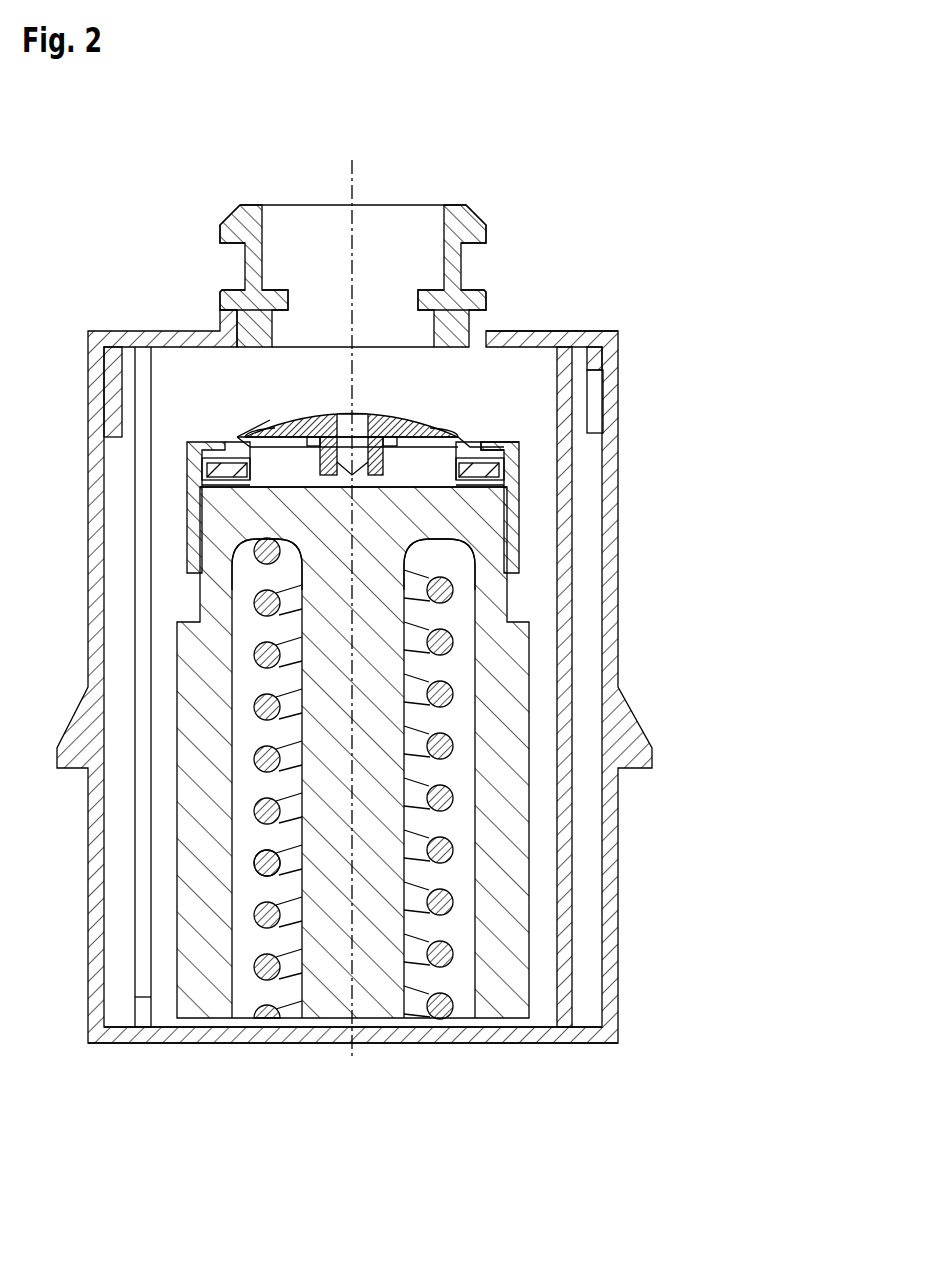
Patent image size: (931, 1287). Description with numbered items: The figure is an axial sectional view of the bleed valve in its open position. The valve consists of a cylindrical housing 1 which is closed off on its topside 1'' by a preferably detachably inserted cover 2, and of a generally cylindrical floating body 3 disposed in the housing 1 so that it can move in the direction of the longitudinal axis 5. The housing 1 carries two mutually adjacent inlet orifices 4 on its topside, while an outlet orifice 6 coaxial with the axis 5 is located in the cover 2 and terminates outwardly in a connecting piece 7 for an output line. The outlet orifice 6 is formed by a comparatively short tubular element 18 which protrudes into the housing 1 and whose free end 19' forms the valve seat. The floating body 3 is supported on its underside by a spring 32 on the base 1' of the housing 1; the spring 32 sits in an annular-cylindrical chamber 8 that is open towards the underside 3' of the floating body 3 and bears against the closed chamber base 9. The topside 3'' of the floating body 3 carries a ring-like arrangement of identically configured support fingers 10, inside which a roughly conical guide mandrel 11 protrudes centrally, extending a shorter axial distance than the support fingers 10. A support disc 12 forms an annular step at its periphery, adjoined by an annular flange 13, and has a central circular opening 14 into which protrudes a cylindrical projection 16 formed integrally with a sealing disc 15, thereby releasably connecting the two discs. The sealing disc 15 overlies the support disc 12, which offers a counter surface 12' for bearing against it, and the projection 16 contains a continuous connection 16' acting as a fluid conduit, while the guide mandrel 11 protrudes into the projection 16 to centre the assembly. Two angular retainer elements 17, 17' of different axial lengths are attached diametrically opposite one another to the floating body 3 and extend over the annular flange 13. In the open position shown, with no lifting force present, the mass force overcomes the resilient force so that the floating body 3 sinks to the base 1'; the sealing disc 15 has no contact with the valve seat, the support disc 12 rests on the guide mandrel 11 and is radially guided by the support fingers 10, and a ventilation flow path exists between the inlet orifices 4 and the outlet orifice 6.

The housing 1 is at (343, 676).
The base 1' is at (353, 1068).
The topside 1'' is at (364, 172).
The cover 2 is at (512, 328).
The floating body 3 is at (302, 687).
The underside 3' is at (176, 1053).
The topside 3'' is at (581, 469).
The inlet orifices 4 is at (92, 542).
The longitudinal axis 5 is at (354, 158).
The outlet orifice 6 is at (290, 268).
The connecting piece 7 is at (235, 213).
The annular-cylindrical chamber 8 is at (250, 793).
The chamber base 9 is at (236, 583).
The support fingers 10 is at (220, 483).
The guide mandrel 11 is at (258, 457).
The support disc 12 is at (241, 412).
The counter surface 12' is at (538, 366).
The annular flange 13 is at (527, 453).
The central circular opening 14 is at (346, 430).
The sealing disc 15 is at (272, 412).
The cylindrical projection 16 is at (440, 288).
The continuous connection 16' is at (351, 288).
The retainer element 17 is at (125, 507).
The retainer element 17' is at (584, 507).
The tubular element 18 is at (273, 317).
The free end 19' is at (281, 288).
The spring 32 is at (257, 862).